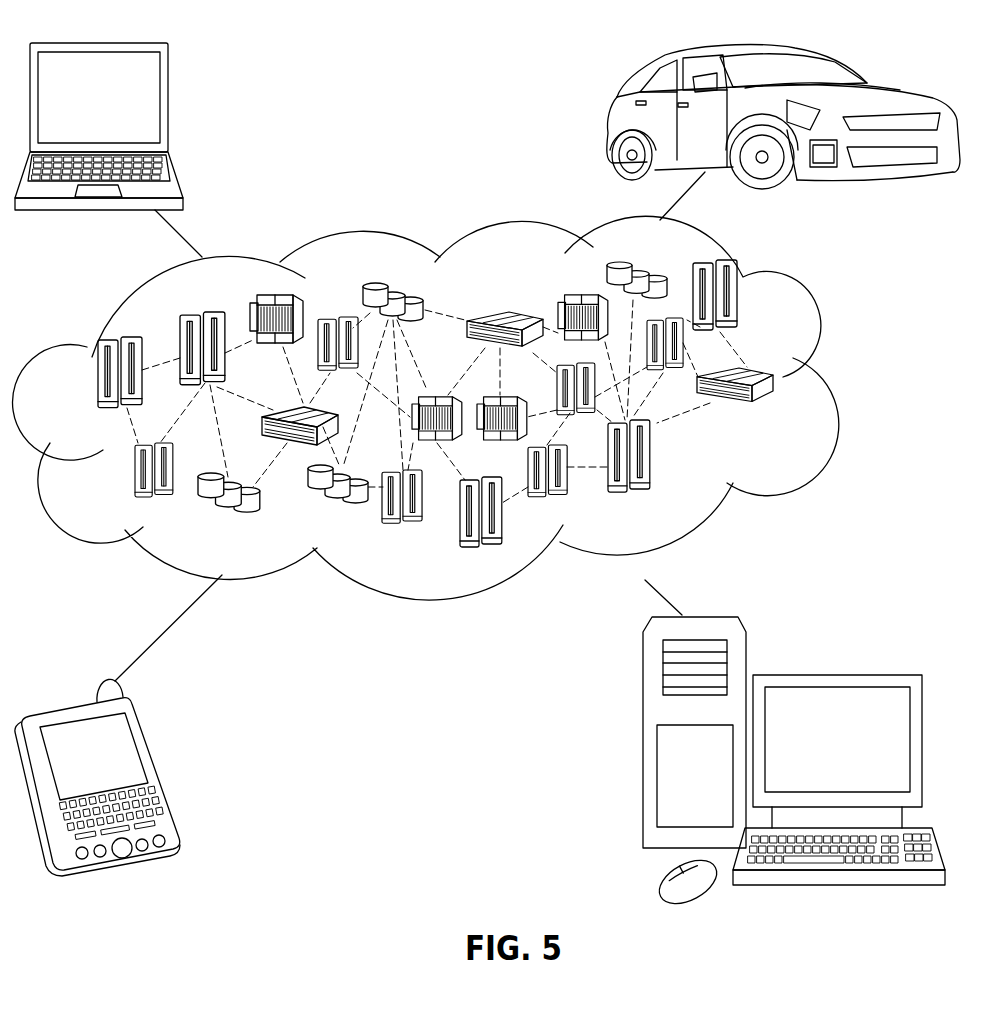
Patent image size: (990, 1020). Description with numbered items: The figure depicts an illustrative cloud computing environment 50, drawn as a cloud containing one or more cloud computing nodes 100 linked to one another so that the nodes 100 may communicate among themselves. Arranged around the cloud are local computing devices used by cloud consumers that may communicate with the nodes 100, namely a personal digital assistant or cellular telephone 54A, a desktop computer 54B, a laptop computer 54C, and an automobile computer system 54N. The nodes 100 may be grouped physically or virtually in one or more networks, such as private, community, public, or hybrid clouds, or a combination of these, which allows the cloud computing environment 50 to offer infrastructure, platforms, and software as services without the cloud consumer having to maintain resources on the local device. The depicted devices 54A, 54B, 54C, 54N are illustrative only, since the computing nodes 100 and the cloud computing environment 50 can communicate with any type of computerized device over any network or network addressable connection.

The cloud computing environment 50 is at (835, 382).
The cloud computing nodes 100 is at (498, 403).
The personal digital assistant (PDA) or cellular telephone 54A is at (158, 770).
The desktop computer 54B is at (833, 675).
The laptop computer 54C is at (171, 105).
The automobile computer system 54N is at (613, 120).